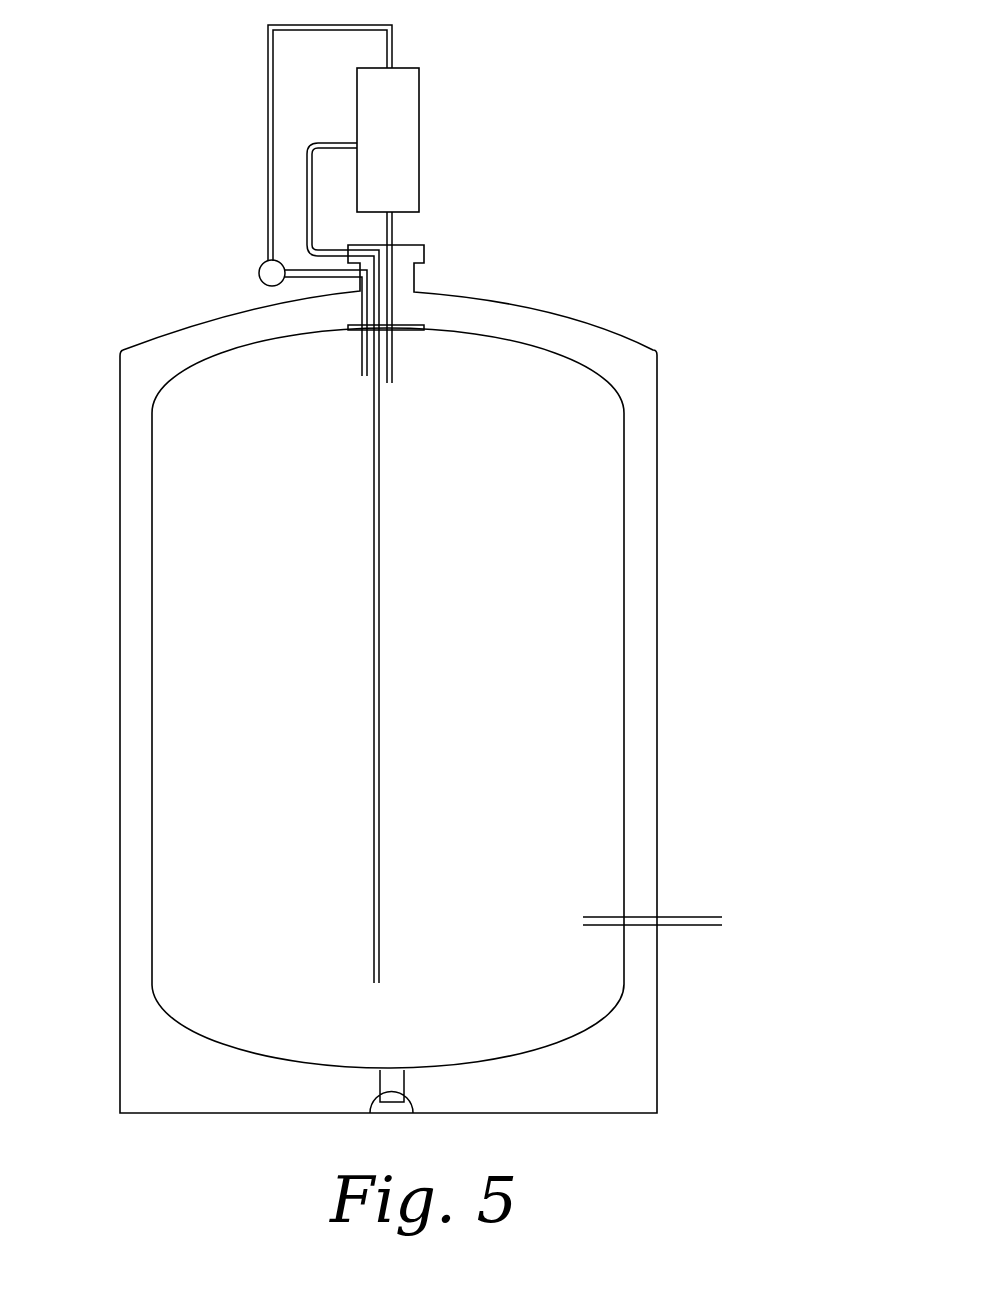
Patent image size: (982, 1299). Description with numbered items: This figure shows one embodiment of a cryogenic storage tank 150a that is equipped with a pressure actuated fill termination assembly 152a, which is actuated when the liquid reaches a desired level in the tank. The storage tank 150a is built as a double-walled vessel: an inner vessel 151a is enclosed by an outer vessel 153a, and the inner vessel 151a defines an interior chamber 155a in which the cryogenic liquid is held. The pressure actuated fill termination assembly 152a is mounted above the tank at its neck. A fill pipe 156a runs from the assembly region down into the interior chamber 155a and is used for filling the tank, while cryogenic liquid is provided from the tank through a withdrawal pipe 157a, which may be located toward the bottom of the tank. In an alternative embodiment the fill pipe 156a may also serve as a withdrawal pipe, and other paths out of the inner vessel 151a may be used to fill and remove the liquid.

The storage tank 150a is at (141, 187).
The inner vessel 151a is at (623, 405).
The pressure actuated fill termination assembly 152a is at (427, 123).
The outer vessel 153a is at (658, 468).
The interior chamber 155a is at (570, 665).
The fill pipe 156a is at (330, 142).
The withdrawal pipe 157a is at (695, 913).